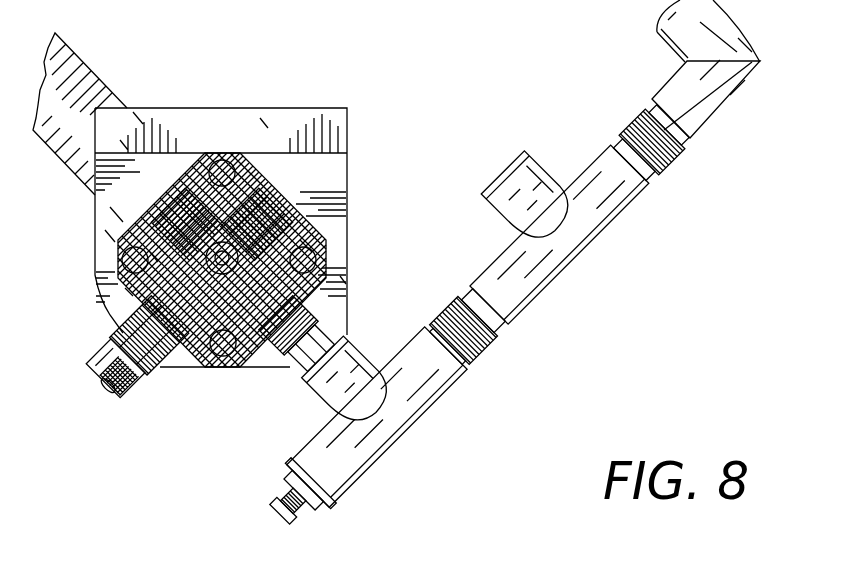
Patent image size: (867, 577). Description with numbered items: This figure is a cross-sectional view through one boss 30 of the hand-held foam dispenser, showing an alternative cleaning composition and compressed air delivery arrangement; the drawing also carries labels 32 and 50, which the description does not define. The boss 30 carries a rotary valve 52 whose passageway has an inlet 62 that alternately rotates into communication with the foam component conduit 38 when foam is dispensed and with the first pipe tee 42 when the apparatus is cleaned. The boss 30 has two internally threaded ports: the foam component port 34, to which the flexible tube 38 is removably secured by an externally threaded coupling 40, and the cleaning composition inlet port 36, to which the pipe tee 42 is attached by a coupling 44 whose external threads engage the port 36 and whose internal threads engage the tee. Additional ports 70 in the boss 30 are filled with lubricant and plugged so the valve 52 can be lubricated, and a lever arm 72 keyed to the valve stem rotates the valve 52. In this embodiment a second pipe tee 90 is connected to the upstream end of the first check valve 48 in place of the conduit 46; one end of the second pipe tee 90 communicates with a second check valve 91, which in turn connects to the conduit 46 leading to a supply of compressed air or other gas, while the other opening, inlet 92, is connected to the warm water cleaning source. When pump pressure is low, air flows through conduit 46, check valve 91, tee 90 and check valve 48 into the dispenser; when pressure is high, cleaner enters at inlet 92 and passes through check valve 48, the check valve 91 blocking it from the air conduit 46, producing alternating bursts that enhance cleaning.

The boss 30 is at (229, 368).
The passage 32 is at (150, 256).
The foam component port 34 is at (125, 292).
The cleaning composition inlet port 36 is at (346, 280).
The conduit 38 is at (118, 392).
The coupling 40 is at (152, 372).
The pipe tee 42 is at (413, 427).
The coupling 44 is at (284, 370).
The conduit 46 is at (735, 99).
The check valve 48 is at (492, 341).
The fitting 50 is at (292, 505).
The rotary valve 52 is at (224, 236).
The inlet 62 is at (306, 244).
The ports 70 is at (168, 199).
The lever arm 72 is at (86, 63).
The second pipe tee 90 is at (590, 239).
The second check valve 91 is at (683, 157).
The inlet 92 is at (500, 167).